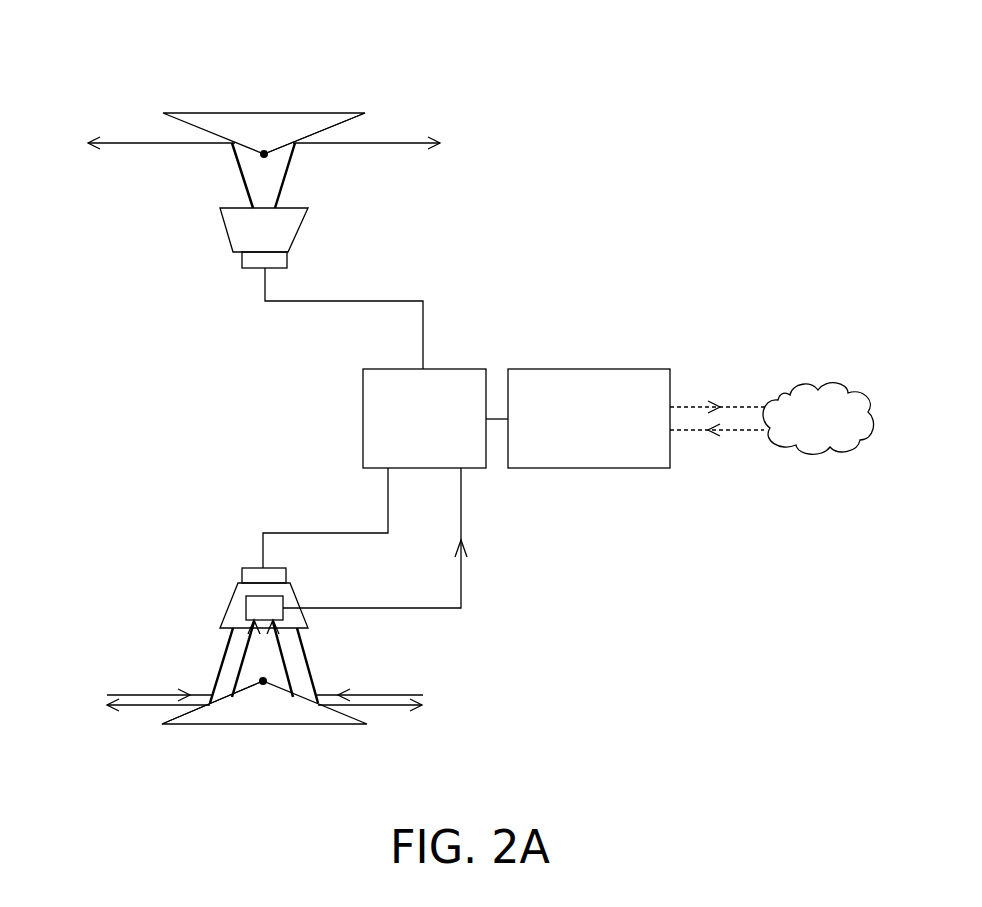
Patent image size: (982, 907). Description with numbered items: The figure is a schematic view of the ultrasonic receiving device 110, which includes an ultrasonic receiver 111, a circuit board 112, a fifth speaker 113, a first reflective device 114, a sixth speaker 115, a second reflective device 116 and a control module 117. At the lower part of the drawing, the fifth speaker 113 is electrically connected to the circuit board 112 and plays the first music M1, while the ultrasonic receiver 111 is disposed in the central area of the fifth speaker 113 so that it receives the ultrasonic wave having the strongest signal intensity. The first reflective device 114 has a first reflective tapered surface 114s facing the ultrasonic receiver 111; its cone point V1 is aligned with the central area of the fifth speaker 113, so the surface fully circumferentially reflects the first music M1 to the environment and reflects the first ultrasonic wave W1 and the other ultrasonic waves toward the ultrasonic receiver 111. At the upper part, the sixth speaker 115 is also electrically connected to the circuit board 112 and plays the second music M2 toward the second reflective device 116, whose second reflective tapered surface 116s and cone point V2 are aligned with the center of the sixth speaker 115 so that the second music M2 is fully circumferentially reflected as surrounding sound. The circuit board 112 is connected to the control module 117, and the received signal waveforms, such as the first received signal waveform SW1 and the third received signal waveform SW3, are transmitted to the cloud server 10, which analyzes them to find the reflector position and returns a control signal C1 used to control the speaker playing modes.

The ultrasonic receiving device 110 is at (463, 68).
The second reflective device 116 is at (263, 122).
The second reflective tapered surface 116s is at (330, 125).
The cone point V2 is at (261, 160).
The second music M2 is at (264, 144).
The sixth speaker 115 is at (232, 232).
The circuit board 112 is at (445, 431).
The control module 117 is at (608, 431).
The cloud server 10 is at (833, 430).
The first received signal waveform SW1 is at (719, 341).
The control signal C1 is at (716, 447).
The third received signal waveform SW3 is at (530, 575).
The fifth speaker 113 is at (235, 592).
The ultrasonic receiver 111 is at (245, 617).
The first reflective device 114 is at (275, 717).
The first reflective tapered surface 114s is at (187, 715).
The cone point V1 is at (263, 681).
The first music M1 is at (266, 718).
The first ultrasonic wave W1 is at (323, 683).